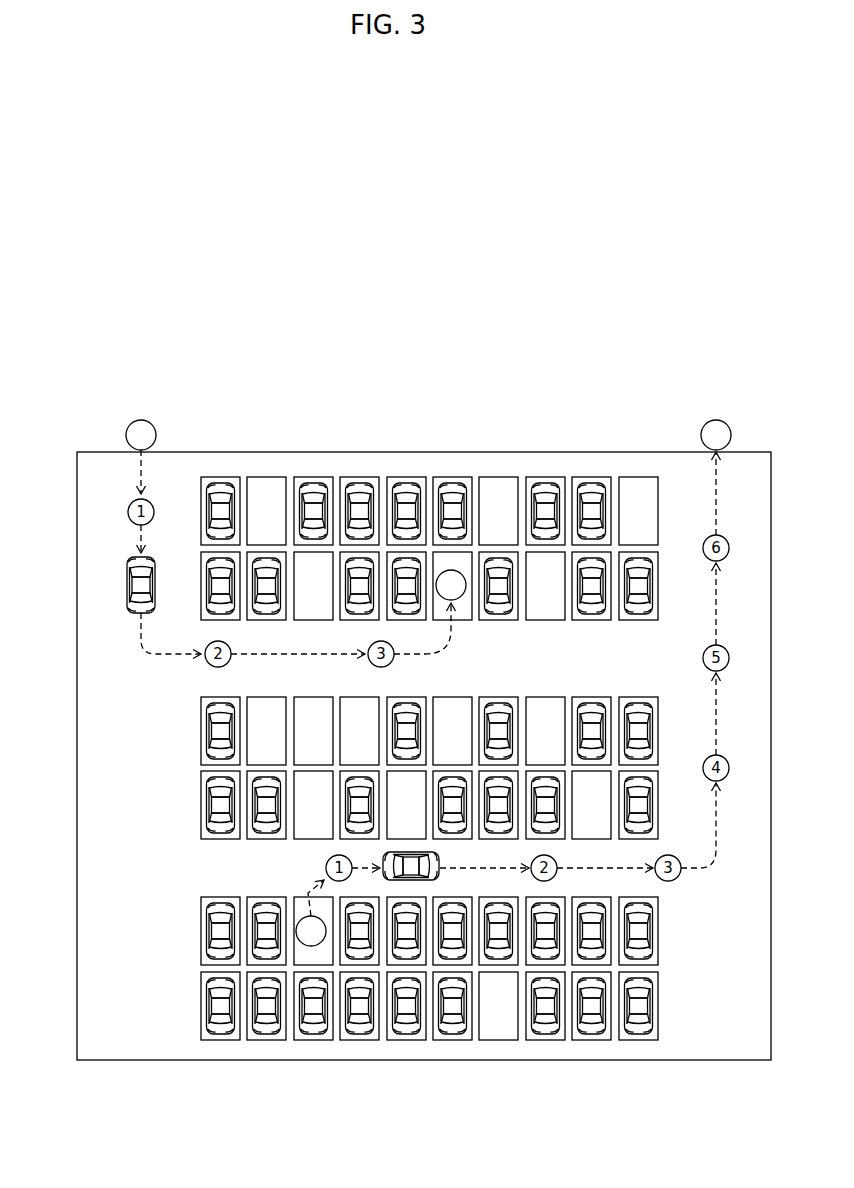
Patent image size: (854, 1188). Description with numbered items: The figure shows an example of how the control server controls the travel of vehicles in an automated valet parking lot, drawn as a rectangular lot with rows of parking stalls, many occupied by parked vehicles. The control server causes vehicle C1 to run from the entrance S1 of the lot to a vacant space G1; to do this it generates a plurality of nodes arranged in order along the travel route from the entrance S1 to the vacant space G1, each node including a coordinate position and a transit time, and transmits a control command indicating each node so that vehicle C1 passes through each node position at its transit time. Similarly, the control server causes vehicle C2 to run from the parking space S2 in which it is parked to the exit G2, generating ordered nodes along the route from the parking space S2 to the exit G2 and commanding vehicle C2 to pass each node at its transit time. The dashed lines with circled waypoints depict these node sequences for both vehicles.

The vehicle C1 is at (126, 586).
The vehicle C2 is at (388, 853).
The entrance S1 is at (141, 435).
The parking space S2 is at (311, 931).
The vacant space G1 is at (451, 585).
The exit G2 is at (716, 435).